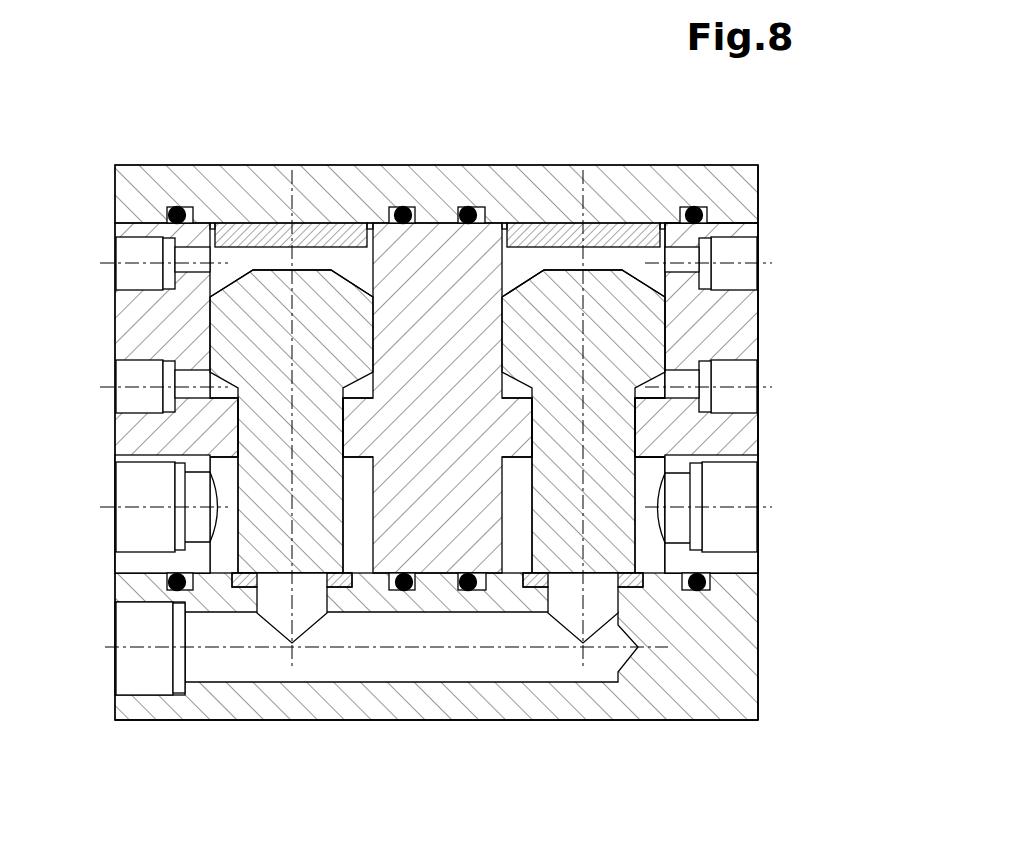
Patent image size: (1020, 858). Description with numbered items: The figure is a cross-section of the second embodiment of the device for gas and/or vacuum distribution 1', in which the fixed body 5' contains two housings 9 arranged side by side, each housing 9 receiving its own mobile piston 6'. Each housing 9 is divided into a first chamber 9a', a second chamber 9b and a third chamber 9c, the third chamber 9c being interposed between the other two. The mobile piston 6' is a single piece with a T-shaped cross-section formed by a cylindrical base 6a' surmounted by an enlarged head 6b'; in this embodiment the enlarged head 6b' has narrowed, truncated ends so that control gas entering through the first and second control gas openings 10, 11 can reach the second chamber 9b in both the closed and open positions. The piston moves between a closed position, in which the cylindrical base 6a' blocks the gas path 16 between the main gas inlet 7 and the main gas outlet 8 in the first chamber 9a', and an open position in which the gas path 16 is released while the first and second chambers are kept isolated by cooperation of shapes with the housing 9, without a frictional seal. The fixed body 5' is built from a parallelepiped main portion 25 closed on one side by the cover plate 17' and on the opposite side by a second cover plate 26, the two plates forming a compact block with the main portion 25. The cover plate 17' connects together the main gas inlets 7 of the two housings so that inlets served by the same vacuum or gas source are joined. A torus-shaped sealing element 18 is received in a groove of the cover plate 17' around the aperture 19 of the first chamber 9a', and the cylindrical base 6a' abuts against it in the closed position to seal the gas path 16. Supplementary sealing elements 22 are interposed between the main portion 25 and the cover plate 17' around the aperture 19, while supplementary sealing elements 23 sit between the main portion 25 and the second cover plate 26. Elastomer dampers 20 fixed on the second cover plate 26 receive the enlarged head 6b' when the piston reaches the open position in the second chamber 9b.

The device for gas and/or vacuum distribution 1' is at (403, 395).
The fixed body 5' is at (778, 404).
The mobile piston 6' is at (437, 336).
The cylindrical base 6a' is at (436, 486).
The enlarged head 6b' is at (437, 339).
The main gas inlet 7 is at (117, 680).
The main gas outlet 8 is at (116, 523).
The housing 9 is at (233, 250).
The first chamber 9a' is at (436, 647).
The second chamber 9b is at (265, 258).
The third chamber 9c is at (238, 445).
The first control gas opening 10 is at (116, 247).
The second control gas opening 11 is at (116, 375).
The gas path 16 is at (300, 667).
The cover plate 17' is at (448, 676).
The sealing element 18 is at (243, 585).
The aperture 19 is at (308, 583).
The damper 20 is at (313, 237).
The supplementary sealing element 22 is at (175, 590).
The supplementary sealing element 23 is at (173, 207).
The main portion 25 is at (750, 318).
The second cover plate 26 is at (413, 183).